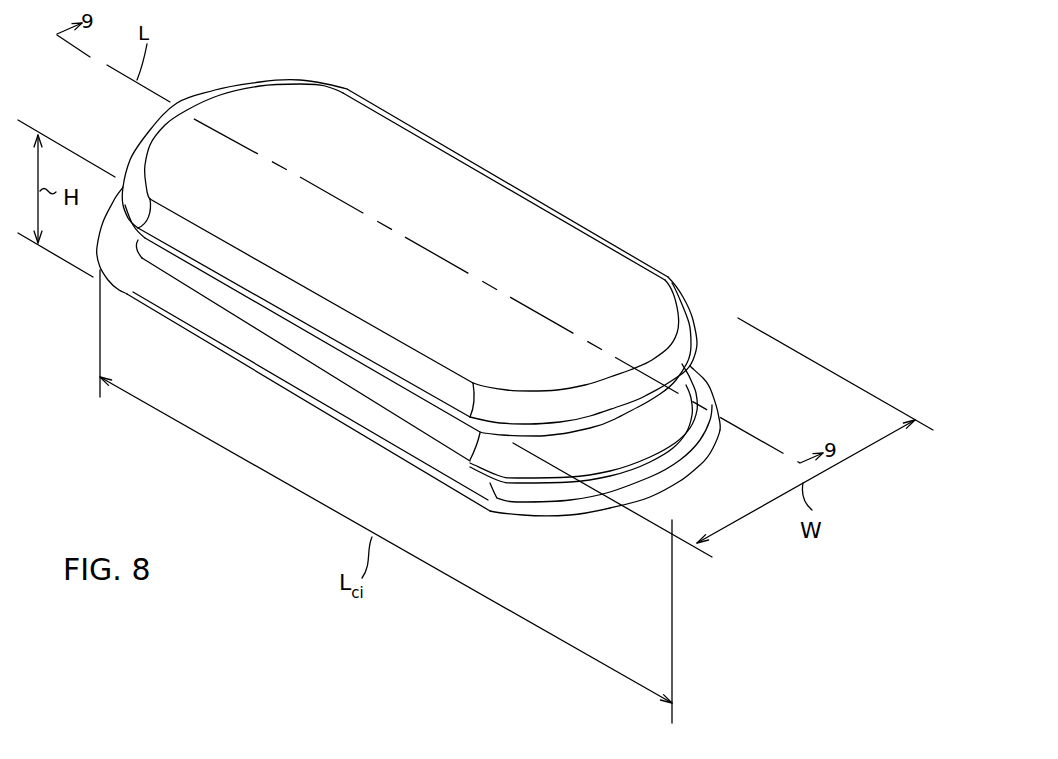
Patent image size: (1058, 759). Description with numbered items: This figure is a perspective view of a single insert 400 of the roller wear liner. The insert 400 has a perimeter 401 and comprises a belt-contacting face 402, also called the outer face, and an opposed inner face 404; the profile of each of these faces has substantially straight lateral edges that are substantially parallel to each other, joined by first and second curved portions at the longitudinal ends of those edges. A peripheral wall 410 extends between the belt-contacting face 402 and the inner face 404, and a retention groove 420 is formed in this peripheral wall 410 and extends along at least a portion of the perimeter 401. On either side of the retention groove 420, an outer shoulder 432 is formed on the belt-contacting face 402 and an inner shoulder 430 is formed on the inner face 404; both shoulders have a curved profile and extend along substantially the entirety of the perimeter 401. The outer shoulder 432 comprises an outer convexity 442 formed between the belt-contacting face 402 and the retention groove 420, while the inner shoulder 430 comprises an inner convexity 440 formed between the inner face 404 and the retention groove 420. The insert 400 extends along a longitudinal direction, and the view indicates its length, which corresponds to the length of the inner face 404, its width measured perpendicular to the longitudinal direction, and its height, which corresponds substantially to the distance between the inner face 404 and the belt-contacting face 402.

The insert 400 is at (553, 143).
The belt-contacting face 402 is at (447, 197).
The outer convexity 442 is at (148, 137).
The outer shoulder 432 is at (687, 303).
The perimeter 401 is at (230, 323).
The peripheral wall 410 is at (685, 387).
The retention groove 420 is at (608, 452).
The inner shoulder 430 is at (702, 430).
The inner face 404 is at (443, 477).
The inner convexity 440 is at (702, 447).